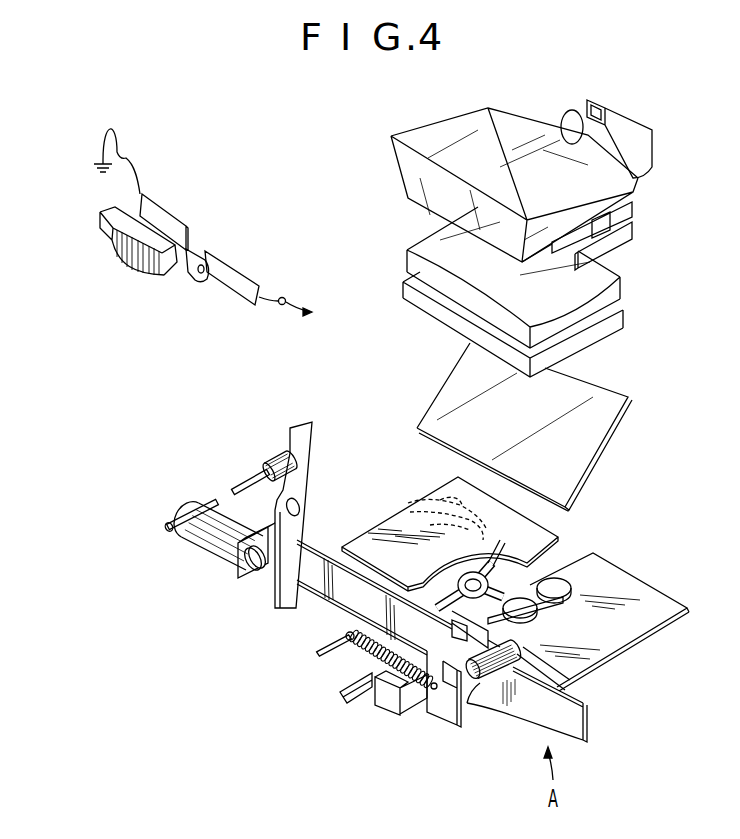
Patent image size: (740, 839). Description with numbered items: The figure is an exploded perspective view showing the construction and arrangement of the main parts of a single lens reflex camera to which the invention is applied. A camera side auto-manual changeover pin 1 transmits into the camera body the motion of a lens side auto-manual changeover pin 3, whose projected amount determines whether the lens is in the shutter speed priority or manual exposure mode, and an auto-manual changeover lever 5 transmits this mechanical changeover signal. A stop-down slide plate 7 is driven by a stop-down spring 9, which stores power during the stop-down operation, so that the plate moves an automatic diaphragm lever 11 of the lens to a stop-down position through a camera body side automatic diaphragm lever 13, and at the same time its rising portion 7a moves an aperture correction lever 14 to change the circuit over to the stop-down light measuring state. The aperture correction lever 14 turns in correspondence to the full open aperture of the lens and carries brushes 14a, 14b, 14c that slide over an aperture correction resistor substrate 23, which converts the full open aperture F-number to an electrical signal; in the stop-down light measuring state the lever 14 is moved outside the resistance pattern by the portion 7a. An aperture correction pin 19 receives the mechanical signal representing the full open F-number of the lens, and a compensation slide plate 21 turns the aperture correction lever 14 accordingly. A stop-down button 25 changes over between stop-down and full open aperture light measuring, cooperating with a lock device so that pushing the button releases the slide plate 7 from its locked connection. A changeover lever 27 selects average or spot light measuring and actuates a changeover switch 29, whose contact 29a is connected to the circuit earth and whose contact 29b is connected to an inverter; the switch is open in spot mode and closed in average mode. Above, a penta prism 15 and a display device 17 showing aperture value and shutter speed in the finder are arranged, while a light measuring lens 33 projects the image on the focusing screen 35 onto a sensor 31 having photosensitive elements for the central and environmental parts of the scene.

The camera side auto-manual changeover pin 1 is at (250, 480).
The lens side auto-manual changeover pin 3 is at (170, 523).
The auto-manual changeover lever 5 is at (312, 438).
The stop-down slide plate 7 is at (588, 721).
The rising portion of the slide plate 7a is at (458, 632).
The stop-down spring 9 is at (367, 658).
The automatic diaphragm lever 11 is at (360, 705).
The camera body side automatic diaphragm lever 13 is at (405, 715).
The aperture correction lever 14 is at (444, 520).
The grounded brush 14a is at (433, 495).
The grounded brush 14b is at (415, 515).
The brush 14c is at (400, 520).
The penta prism 15 is at (531, 115).
The display device 17 is at (637, 230).
The aperture correction pin 19 is at (510, 673).
The compensation slide plate 21 is at (540, 622).
The aperture correction resistor substrate 23 is at (363, 533).
The stop-down button 25 is at (197, 548).
The changeover lever 27 is at (99, 211).
The changeover switch 29 is at (207, 252).
The contact 29a is at (173, 212).
The contact 29b is at (242, 270).
The sensor 31 is at (604, 98).
The light measuring lens 33 is at (572, 110).
The focusing screen 35 is at (437, 318).